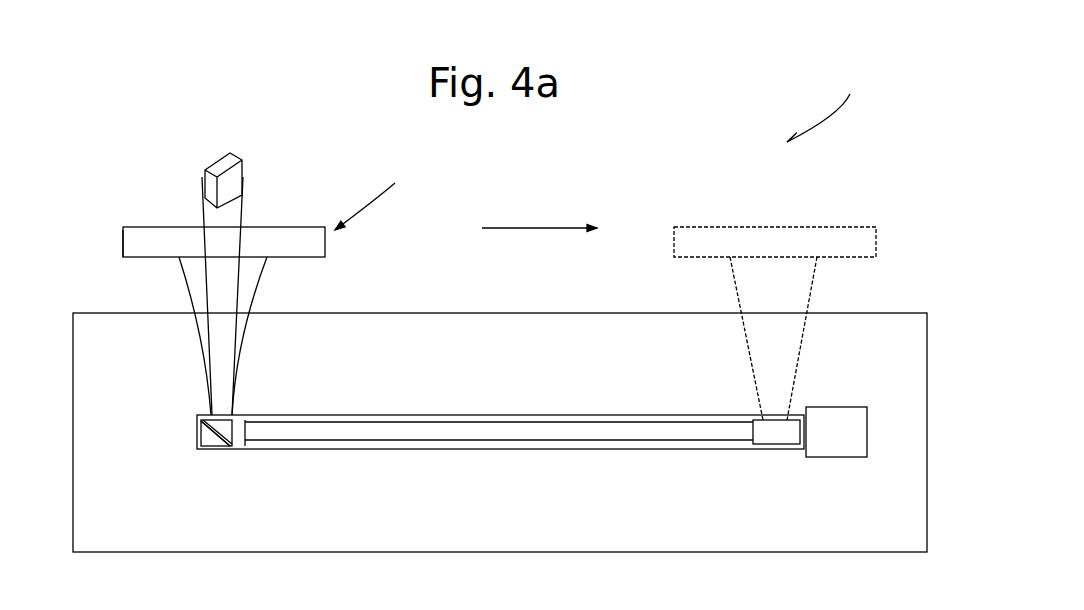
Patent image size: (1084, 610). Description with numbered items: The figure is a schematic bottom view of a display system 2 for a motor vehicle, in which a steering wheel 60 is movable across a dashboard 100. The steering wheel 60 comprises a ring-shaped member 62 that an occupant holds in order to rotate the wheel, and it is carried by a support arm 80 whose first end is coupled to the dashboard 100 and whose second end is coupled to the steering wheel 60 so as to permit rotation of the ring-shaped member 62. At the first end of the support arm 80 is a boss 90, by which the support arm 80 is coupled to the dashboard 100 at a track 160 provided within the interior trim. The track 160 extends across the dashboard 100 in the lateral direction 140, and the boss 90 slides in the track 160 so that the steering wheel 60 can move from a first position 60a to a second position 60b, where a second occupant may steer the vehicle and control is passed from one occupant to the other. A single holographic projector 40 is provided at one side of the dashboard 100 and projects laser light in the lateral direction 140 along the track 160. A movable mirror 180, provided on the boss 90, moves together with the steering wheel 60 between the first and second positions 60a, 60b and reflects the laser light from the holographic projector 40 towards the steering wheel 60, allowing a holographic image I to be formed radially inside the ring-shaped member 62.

The display system 2 is at (821, 107).
The holographic projector 40 is at (833, 407).
The steering wheel 60 is at (373, 194).
The first position 60a is at (280, 227).
The second position 60b is at (810, 227).
The ring-shaped member 62 is at (122, 238).
The support arm 80 is at (258, 290).
The boss 90 is at (240, 415).
The dashboard 100 is at (432, 340).
The lateral direction 140 is at (530, 227).
The track 160 is at (517, 420).
The movable mirror 180 is at (208, 450).
The holographic image I is at (219, 161).